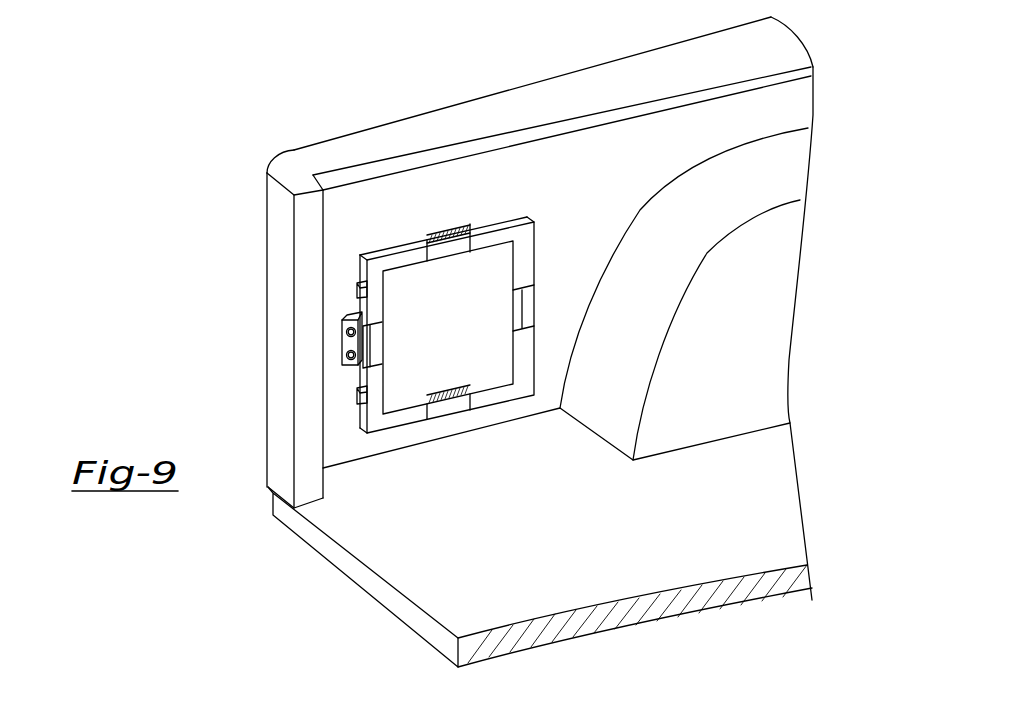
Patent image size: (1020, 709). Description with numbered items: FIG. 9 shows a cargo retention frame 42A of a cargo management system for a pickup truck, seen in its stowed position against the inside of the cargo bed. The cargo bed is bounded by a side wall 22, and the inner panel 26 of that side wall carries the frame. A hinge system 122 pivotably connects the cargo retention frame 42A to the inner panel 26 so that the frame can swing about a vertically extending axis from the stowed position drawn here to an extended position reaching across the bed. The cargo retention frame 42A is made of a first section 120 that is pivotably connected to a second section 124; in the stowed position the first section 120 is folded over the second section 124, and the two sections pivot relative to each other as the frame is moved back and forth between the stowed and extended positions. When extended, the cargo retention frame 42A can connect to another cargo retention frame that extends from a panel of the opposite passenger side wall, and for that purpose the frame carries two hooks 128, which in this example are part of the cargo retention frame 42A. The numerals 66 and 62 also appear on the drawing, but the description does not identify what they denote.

The side wall 22 is at (522, 63).
The inner panel 26 is at (440, 208).
The opening 66 is at (395, 243).
The first section 120 is at (525, 250).
The second section 124 is at (500, 228).
The hook 128 is at (358, 295).
The hinge system 122 is at (350, 342).
The cargo retention frame 42A is at (375, 408).
The lower frame portion 62 is at (485, 410).